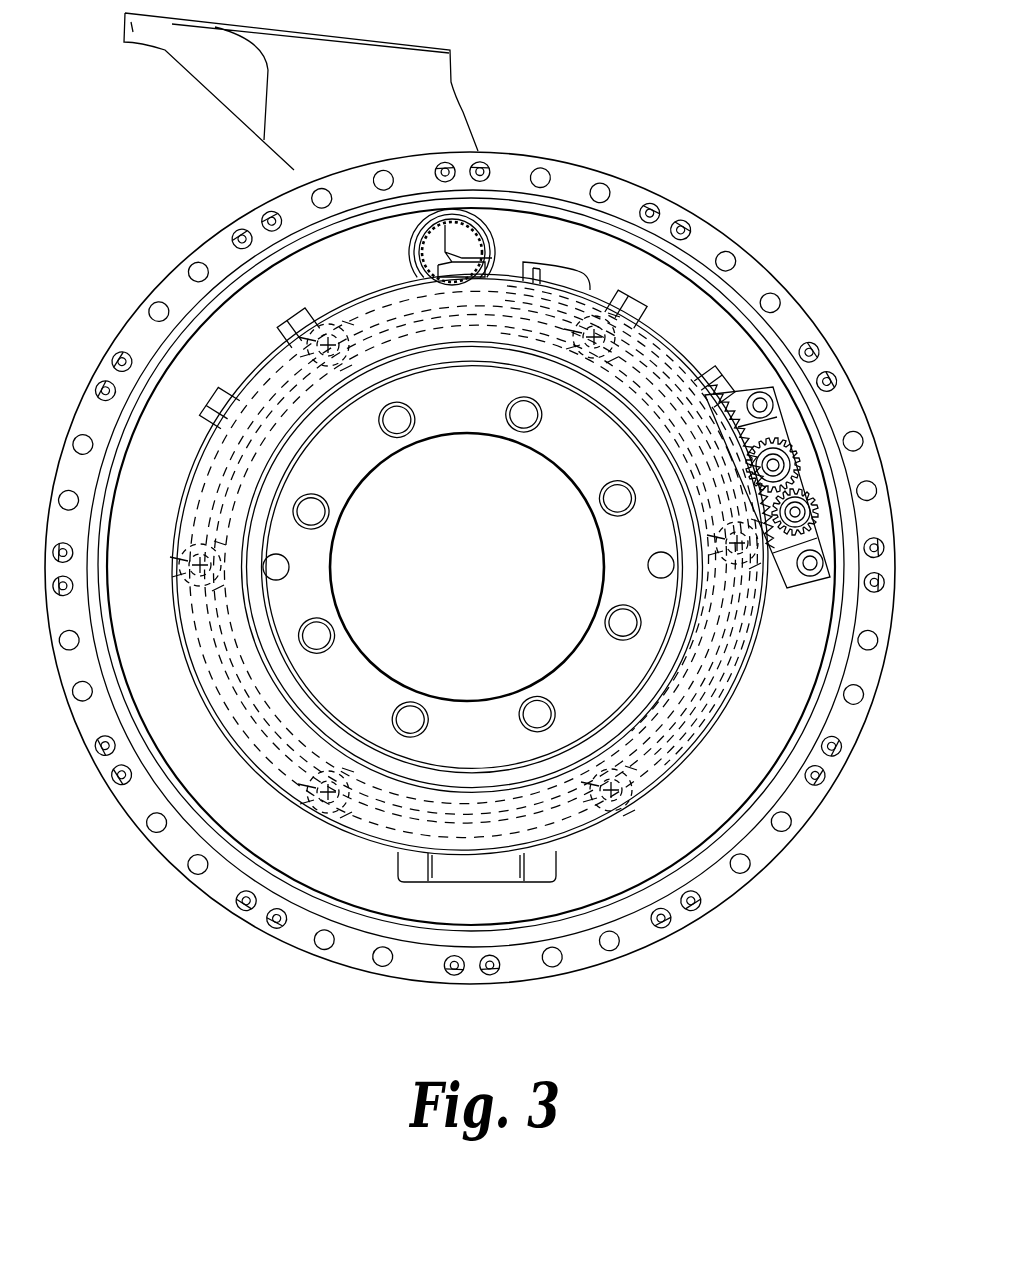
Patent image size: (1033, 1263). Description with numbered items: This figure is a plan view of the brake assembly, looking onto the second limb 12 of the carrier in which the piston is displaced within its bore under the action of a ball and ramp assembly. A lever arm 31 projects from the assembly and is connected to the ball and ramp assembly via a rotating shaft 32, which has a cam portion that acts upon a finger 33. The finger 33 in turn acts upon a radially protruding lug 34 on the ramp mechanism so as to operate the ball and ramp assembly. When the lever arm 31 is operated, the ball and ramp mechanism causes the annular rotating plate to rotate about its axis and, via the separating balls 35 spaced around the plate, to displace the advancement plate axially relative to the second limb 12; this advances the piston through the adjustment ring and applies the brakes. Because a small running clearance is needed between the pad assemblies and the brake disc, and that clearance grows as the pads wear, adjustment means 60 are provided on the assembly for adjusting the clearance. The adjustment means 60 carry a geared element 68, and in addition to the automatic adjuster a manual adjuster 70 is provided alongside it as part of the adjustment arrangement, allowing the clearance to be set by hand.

The second limb 12 is at (642, 945).
The lever arm 31 is at (222, 102).
The rotating shaft 32 is at (478, 250).
The finger 33 is at (565, 268).
The radially protruding lug 34 is at (612, 290).
The separating balls 35 is at (262, 333).
The adjustment means 60 is at (780, 452).
The adjuster gear 68 is at (820, 578).
The manual adjuster 70 is at (828, 545).